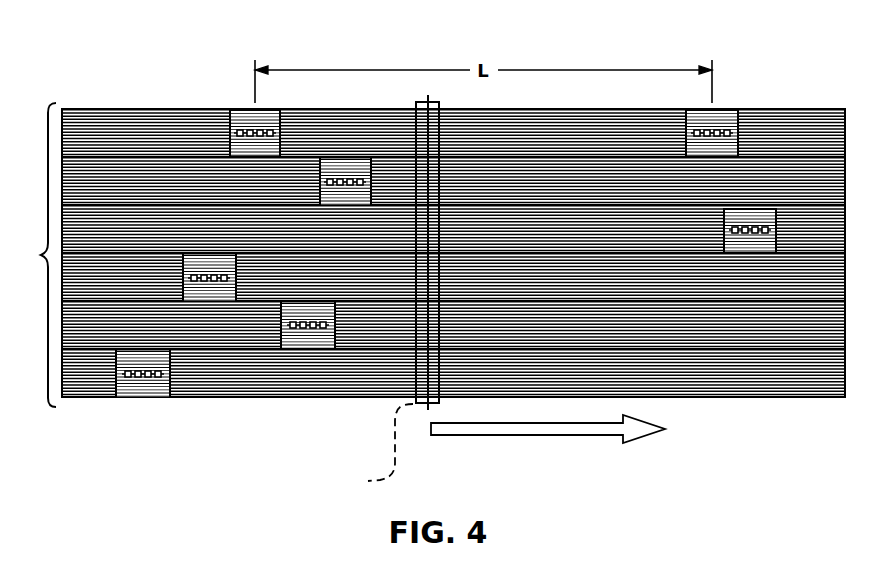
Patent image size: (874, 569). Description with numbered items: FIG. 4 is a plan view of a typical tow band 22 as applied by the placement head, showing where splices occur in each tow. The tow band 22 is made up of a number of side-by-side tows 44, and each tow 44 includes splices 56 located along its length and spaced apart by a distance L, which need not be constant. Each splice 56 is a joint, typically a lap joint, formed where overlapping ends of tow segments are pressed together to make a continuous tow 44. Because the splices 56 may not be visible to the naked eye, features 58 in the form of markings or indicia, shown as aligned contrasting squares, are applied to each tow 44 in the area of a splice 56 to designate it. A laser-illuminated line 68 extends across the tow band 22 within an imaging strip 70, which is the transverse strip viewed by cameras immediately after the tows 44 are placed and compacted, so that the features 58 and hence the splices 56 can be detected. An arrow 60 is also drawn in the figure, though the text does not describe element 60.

The tow band 22 is at (34, 255).
The tows 44 is at (183, 213).
The splices 56 is at (237, 101).
The features (markings or indicia) 58 is at (725, 117).
The layup direction 60 is at (518, 427).
The line 68 is at (415, 337).
The imaging strip 70 is at (378, 448).